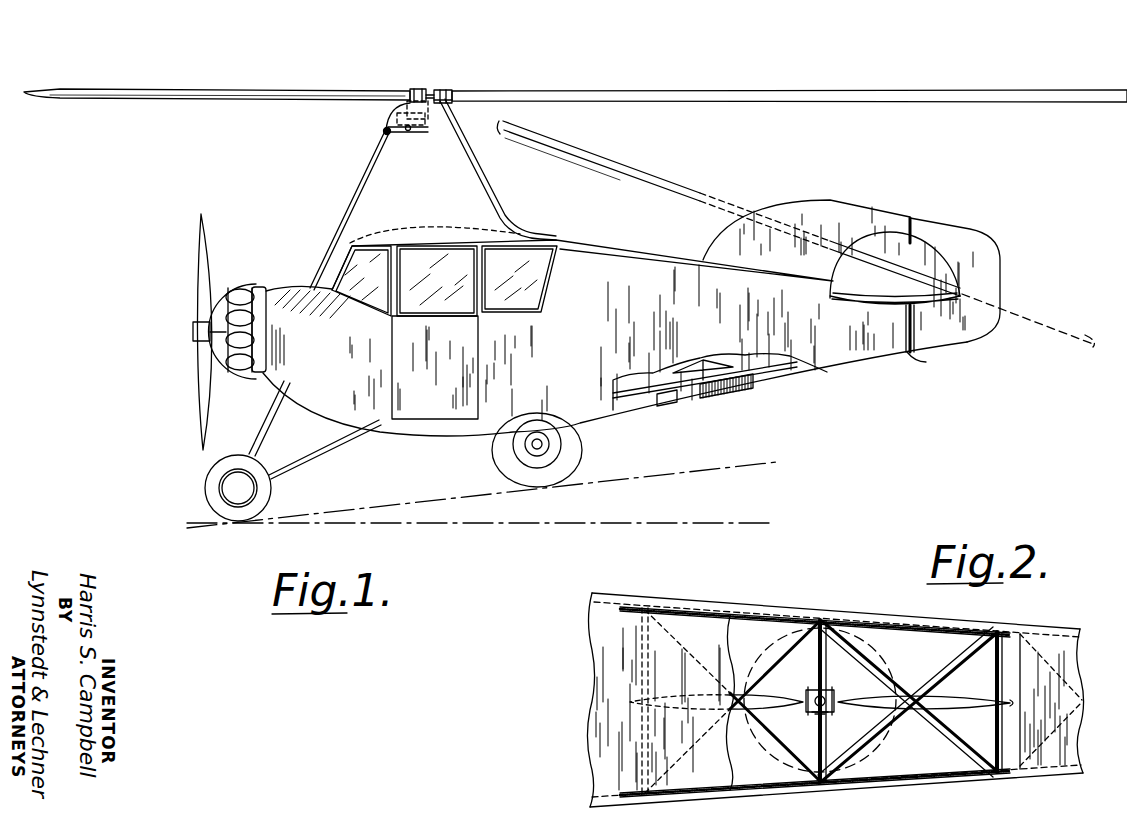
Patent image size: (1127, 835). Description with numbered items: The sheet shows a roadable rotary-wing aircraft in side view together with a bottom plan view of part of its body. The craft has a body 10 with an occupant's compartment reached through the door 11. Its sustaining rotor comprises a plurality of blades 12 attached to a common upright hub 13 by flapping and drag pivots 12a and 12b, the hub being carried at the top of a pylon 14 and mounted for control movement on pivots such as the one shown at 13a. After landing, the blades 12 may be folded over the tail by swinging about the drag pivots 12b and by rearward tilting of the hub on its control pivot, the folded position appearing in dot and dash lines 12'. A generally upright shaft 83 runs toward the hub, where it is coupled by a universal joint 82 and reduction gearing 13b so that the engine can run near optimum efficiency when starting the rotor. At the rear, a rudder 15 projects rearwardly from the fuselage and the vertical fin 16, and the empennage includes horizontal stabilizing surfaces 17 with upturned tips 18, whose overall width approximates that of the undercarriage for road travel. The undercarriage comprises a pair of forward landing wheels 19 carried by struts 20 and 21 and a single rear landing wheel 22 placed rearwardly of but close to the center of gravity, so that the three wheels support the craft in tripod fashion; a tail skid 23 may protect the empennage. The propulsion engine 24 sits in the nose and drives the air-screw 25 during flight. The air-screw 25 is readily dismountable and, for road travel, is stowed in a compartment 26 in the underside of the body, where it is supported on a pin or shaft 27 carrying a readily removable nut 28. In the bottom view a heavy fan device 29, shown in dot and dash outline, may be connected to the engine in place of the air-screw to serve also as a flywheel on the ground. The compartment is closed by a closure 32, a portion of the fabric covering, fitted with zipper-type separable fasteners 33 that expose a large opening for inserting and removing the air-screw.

In FIG. 1, the body 10 is at (590, 268).
In FIG. 1, the door 11 is at (445, 413).
In FIG. 1, the blades 12 is at (575, 75).
In FIG. 1, the folded rotor blade position 12' is at (795, 234).
In FIG. 1, the flapping pivot 12a is at (432, 90).
In FIG. 1, the drag pivot 12b is at (444, 101).
In FIG. 1, the hub 13 is at (419, 89).
In FIG. 1, the hub control pivot 13a is at (421, 125).
In FIG. 1, the reduction gearing 13b is at (397, 104).
In FIG. 1, the pylon 14 is at (447, 151).
In FIG. 1, the rudder 15 is at (943, 234).
In FIG. 1, the vertical fin 16 is at (817, 210).
In FIG. 1, the horizontal stabilizing surfaces 17 is at (877, 305).
In FIG. 1, the upturned tips 18 is at (881, 241).
In FIG. 1, the forward landing wheels 19 is at (205, 488).
In FIG. 1, the strut 20 is at (273, 426).
In FIG. 1, the strut 21 is at (330, 453).
In FIG. 1, the rear landing wheel 22 is at (575, 454).
In FIG. 1, the tail skid 23 is at (926, 361).
In FIG. 1, the propulsion engine 24 is at (230, 291).
In FIG. 1, the air-screw 25 is at (199, 268).
In FIG. 2, the air-screw 25 is at (960, 698).
In FIG. 1, the compartment 26 is at (787, 377).
In FIG. 1, the pin or shaft 27 is at (677, 381).
In FIG. 2, the pin or shaft 27 is at (823, 713).
In FIG. 2, the nut 28 is at (826, 691).
In FIG. 1, the fan device 29 is at (733, 387).
In FIG. 2, the fan device 29 is at (770, 638).
In FIG. 2, the closure 32 is at (703, 622).
In FIG. 2, the separable fasteners 33 is at (665, 609).
In FIG. 1, the universal joint 82 is at (383, 131).
In FIG. 1, the shaft 83 is at (357, 205).